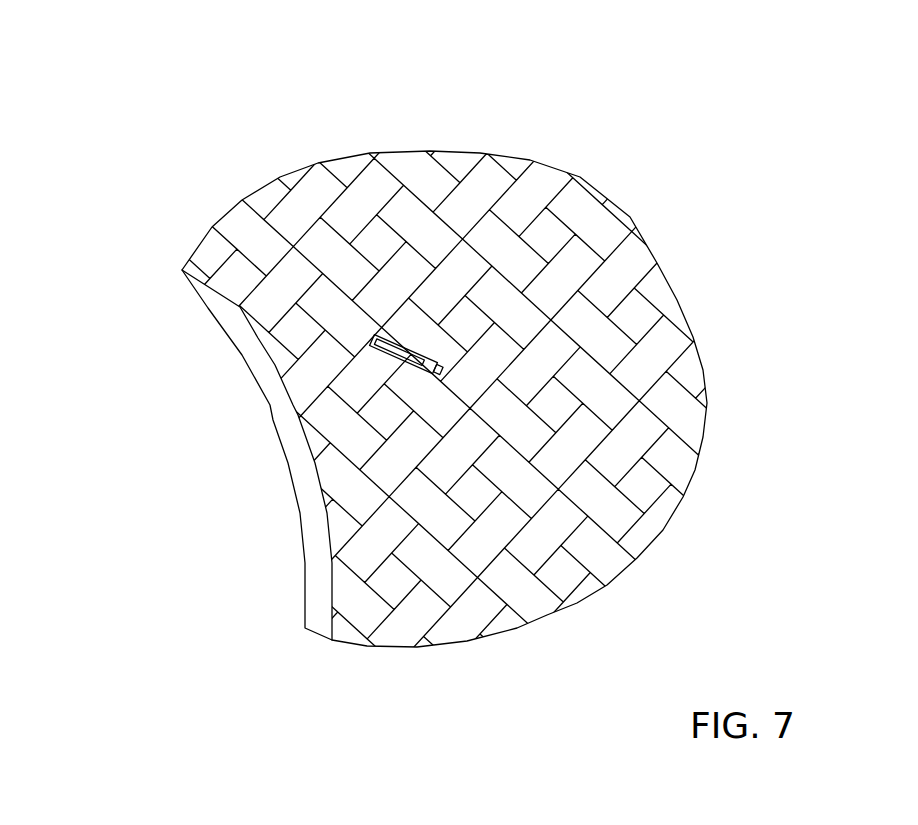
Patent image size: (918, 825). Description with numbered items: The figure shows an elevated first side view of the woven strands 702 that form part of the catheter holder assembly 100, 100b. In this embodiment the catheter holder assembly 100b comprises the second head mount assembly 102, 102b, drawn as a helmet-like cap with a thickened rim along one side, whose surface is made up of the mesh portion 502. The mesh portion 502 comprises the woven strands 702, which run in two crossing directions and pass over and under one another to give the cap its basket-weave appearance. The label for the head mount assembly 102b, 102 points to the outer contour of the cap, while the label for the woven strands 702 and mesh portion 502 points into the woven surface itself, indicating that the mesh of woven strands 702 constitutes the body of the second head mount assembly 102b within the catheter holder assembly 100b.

The catheter holder assembly 100 is at (431, 403).
The catheter holder assembly 100b is at (167, 131).
The head mount assembly 102 is at (431, 403).
The second head mount assembly 102b is at (441, 152).
The woven strands 702 is at (530, 192).
The mesh portion 502 is at (431, 403).